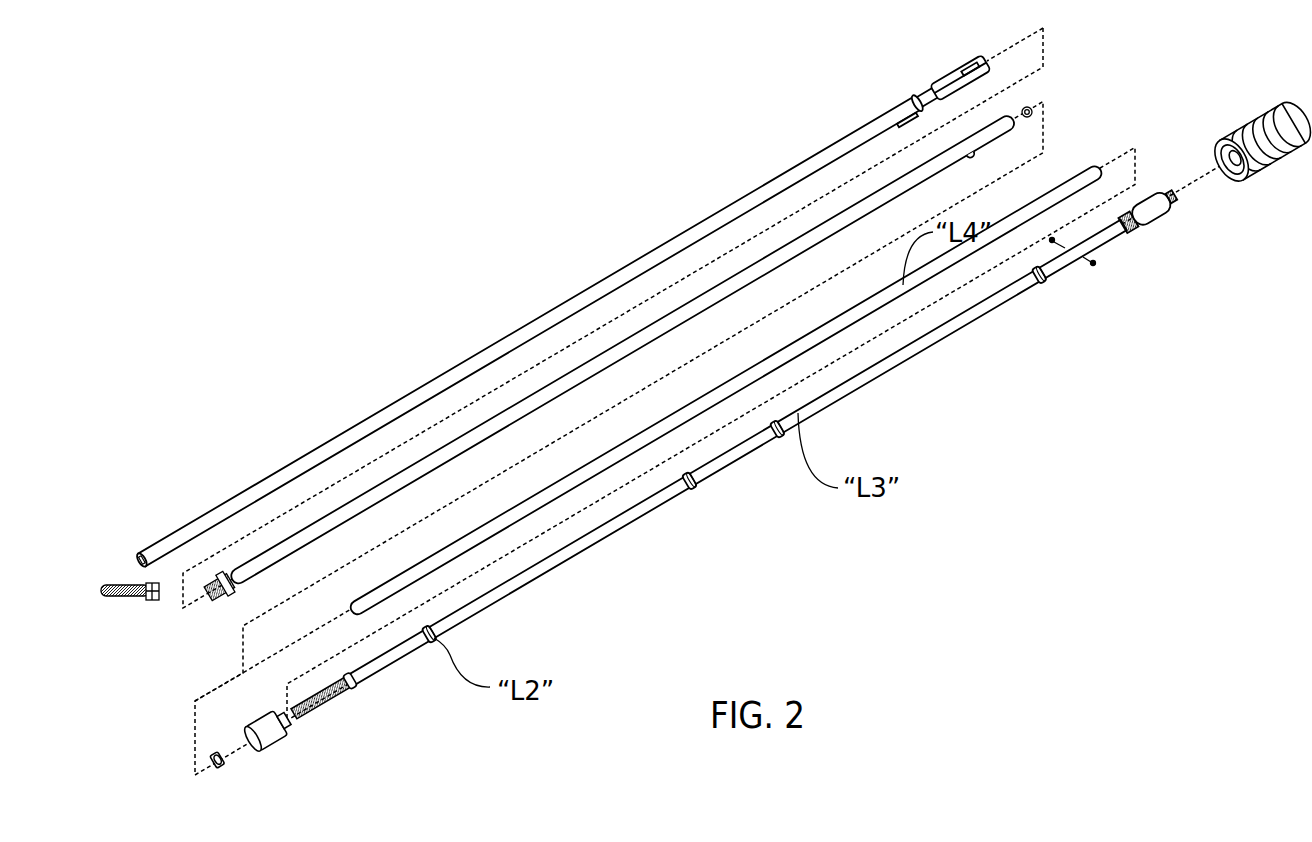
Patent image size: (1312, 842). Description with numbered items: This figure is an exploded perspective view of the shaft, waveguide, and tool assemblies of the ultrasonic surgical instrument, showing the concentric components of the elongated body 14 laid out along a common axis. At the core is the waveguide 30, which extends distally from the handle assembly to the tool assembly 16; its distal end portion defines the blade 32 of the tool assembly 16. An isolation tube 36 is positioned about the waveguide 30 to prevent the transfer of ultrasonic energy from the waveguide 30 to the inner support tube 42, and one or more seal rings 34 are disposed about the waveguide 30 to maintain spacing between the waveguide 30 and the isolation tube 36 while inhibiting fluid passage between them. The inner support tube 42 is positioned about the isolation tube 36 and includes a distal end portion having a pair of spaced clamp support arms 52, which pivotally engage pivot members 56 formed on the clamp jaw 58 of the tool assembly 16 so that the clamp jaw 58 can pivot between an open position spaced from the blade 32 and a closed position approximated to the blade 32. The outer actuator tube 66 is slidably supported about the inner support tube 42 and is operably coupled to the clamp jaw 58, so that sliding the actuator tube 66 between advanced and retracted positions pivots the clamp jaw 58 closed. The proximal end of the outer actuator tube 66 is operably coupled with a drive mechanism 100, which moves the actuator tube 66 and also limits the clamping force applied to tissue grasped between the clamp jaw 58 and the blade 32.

The elongated body 14 is at (506, 312).
The outer actuator tube 66 is at (763, 190).
The inner support tube 42 is at (822, 233).
The seal ring 34 is at (1030, 104).
The isolation tube 36 is at (1078, 175).
The waveguide 30 is at (944, 332).
The blade 32 is at (323, 700).
The tool assembly 16 is at (180, 787).
The clamp support arms 52 is at (213, 592).
The pivot members 56 is at (150, 593).
The clamp jaw 58 is at (114, 597).
The drive mechanism 100 is at (1238, 110).